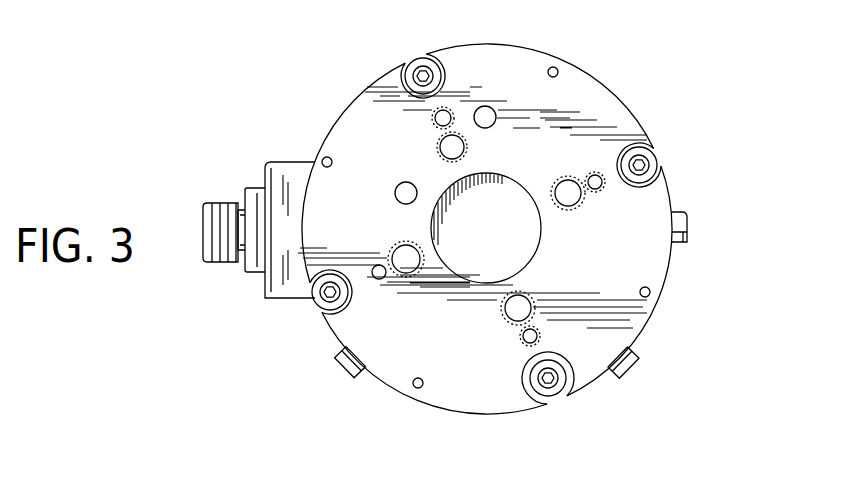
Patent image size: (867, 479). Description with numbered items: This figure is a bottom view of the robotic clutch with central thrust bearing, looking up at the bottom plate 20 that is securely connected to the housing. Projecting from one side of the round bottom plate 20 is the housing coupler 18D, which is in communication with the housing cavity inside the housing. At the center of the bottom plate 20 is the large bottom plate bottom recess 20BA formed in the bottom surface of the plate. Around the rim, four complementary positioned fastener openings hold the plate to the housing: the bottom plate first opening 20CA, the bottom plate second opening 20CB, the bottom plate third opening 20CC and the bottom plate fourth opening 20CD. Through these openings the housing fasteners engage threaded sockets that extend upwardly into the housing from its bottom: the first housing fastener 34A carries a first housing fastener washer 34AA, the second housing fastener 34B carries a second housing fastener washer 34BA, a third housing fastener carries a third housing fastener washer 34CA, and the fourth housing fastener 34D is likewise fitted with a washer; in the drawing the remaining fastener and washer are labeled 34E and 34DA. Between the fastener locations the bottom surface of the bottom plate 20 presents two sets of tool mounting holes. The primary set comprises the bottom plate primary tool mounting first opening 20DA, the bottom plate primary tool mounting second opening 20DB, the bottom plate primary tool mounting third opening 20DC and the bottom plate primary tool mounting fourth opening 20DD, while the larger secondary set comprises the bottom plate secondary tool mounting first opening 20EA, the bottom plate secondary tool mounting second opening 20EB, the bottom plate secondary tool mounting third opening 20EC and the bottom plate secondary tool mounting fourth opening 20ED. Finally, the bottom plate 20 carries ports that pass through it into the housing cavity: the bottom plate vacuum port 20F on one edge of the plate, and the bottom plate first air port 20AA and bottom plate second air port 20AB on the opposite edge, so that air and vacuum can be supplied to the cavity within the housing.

The bottom plate 20 is at (612, 92).
The housing coupler 18D is at (204, 204).
The bottom plate first air port 20AA is at (688, 233).
The bottom plate second air port 20AB is at (632, 373).
The bottom plate vacuum port 20F is at (335, 366).
The bottom plate bottom recess 20BA is at (522, 253).
The bottom plate first opening 20CA is at (643, 146).
The bottom plate second opening 20CB is at (403, 80).
The bottom plate third opening 20CC is at (327, 290).
The bottom plate fourth opening 20CD is at (528, 372).
The bottom plate primary tool mounting first opening 20DA is at (602, 184).
The bottom plate primary tool mounting second opening 20DB is at (447, 114).
The bottom plate primary tool mounting third opening 20DC is at (380, 278).
The bottom plate primary tool mounting fourth opening 20DD is at (540, 338).
The bottom plate secondary tool mounting first opening 20EA is at (567, 200).
The bottom plate secondary tool mounting second opening 20EB is at (452, 148).
The bottom plate secondary tool mounting third opening 20EC is at (412, 266).
The bottom plate secondary tool mounting fourth opening 20ED is at (532, 303).
The first housing fastener 34A is at (652, 167).
The first housing fastener washer 34AA is at (647, 158).
The second housing fastener 34B is at (425, 72).
The second housing fastener washer 34BA is at (410, 63).
The fourth housing fastener 34D is at (545, 378).
The bolt head 34DA is at (552, 386).
The bolt 34E is at (320, 292).
The third housing fastener washer 34CA is at (320, 310).